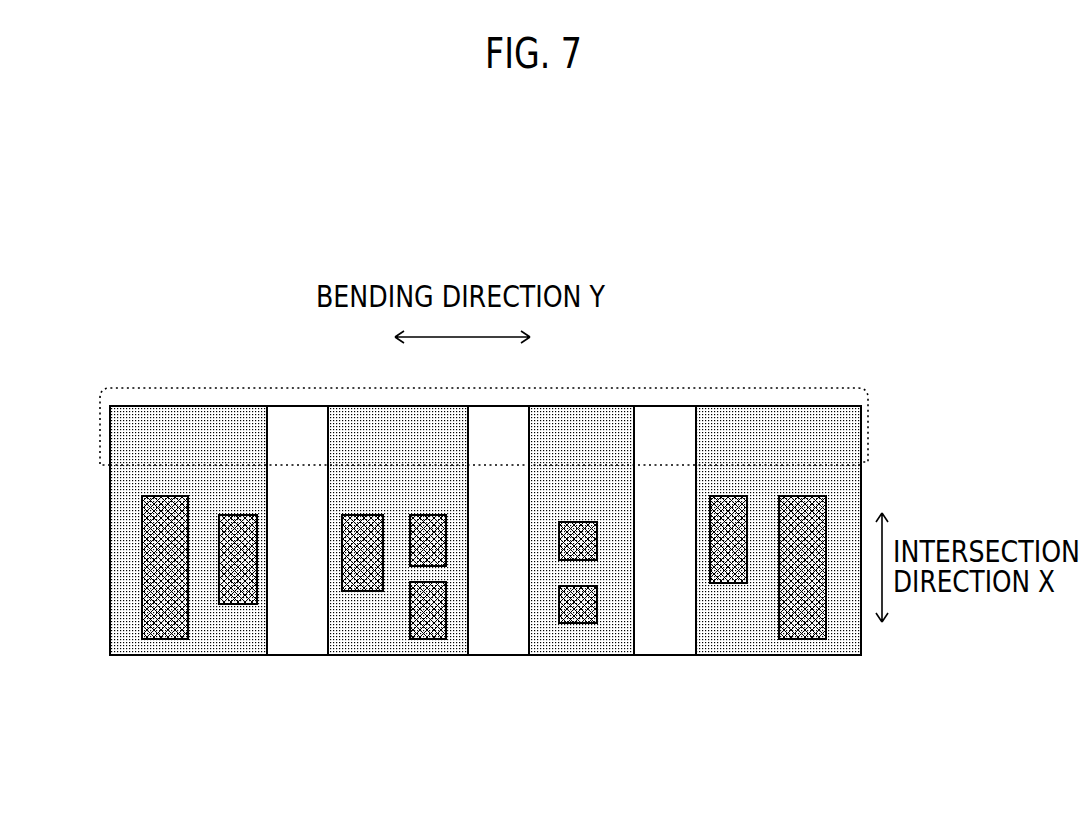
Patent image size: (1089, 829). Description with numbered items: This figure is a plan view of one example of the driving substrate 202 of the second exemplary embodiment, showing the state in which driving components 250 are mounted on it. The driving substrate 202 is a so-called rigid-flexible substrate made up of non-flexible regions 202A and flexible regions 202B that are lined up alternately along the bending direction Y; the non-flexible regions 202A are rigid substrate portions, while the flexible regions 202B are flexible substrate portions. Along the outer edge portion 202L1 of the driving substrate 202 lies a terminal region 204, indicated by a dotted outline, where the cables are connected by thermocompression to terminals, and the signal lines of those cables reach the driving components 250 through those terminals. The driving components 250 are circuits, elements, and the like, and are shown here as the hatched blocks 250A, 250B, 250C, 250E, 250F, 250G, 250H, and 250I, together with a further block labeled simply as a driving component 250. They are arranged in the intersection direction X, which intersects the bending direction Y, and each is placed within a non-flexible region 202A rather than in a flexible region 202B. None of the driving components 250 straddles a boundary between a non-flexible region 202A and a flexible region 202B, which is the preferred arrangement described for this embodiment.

The driving substrate 202 is at (110, 535).
The non-flexible region 202A is at (228, 415).
The flexible region 202B is at (302, 415).
The outer edge portion 202L1 is at (187, 398).
The terminal region 204 is at (98, 427).
The driving component 250 is at (413, 515).
The driving component 250A is at (165, 640).
The driving component 250B is at (240, 604).
The driving component 250C is at (365, 591).
The driving component 250E is at (430, 639).
The driving component 250F is at (613, 508).
The driving component 250G is at (580, 623).
The driving component 250H is at (730, 583).
The driving component 250I is at (800, 639).